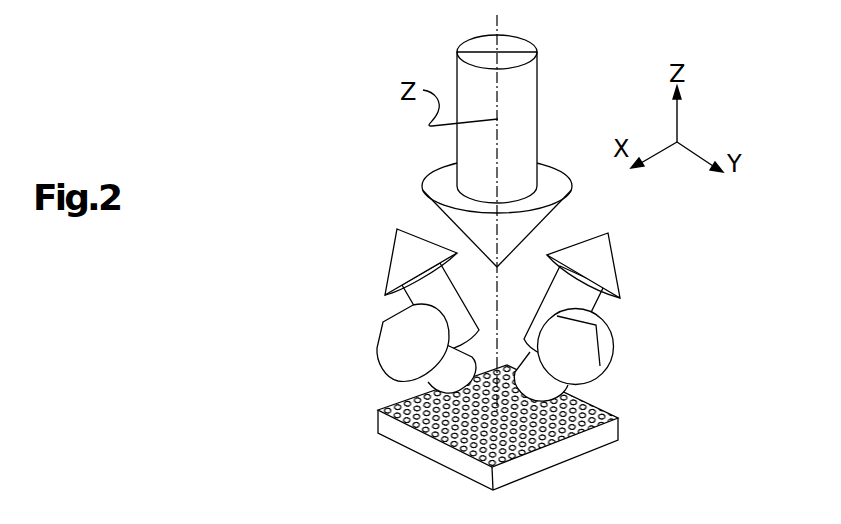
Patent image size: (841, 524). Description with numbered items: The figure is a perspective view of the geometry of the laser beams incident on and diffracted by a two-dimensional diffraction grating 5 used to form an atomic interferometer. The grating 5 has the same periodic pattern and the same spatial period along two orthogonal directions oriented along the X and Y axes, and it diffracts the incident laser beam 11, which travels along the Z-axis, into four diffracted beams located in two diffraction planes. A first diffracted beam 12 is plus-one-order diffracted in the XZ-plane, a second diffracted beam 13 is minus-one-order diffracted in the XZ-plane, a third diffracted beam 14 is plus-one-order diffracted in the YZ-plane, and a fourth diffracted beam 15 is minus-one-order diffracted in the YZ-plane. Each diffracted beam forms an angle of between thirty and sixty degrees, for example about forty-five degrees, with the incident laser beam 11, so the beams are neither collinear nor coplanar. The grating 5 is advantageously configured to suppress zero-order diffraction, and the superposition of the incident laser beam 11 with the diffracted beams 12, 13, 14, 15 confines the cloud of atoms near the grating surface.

The two-dimensional diffraction grating 5 is at (387, 425).
The incident laser beam 11 is at (538, 90).
The first diffracted beam 12 is at (378, 335).
The second diffracted beam 13 is at (615, 262).
The third diffracted beam 14 is at (612, 343).
The fourth diffracted beam 15 is at (392, 262).